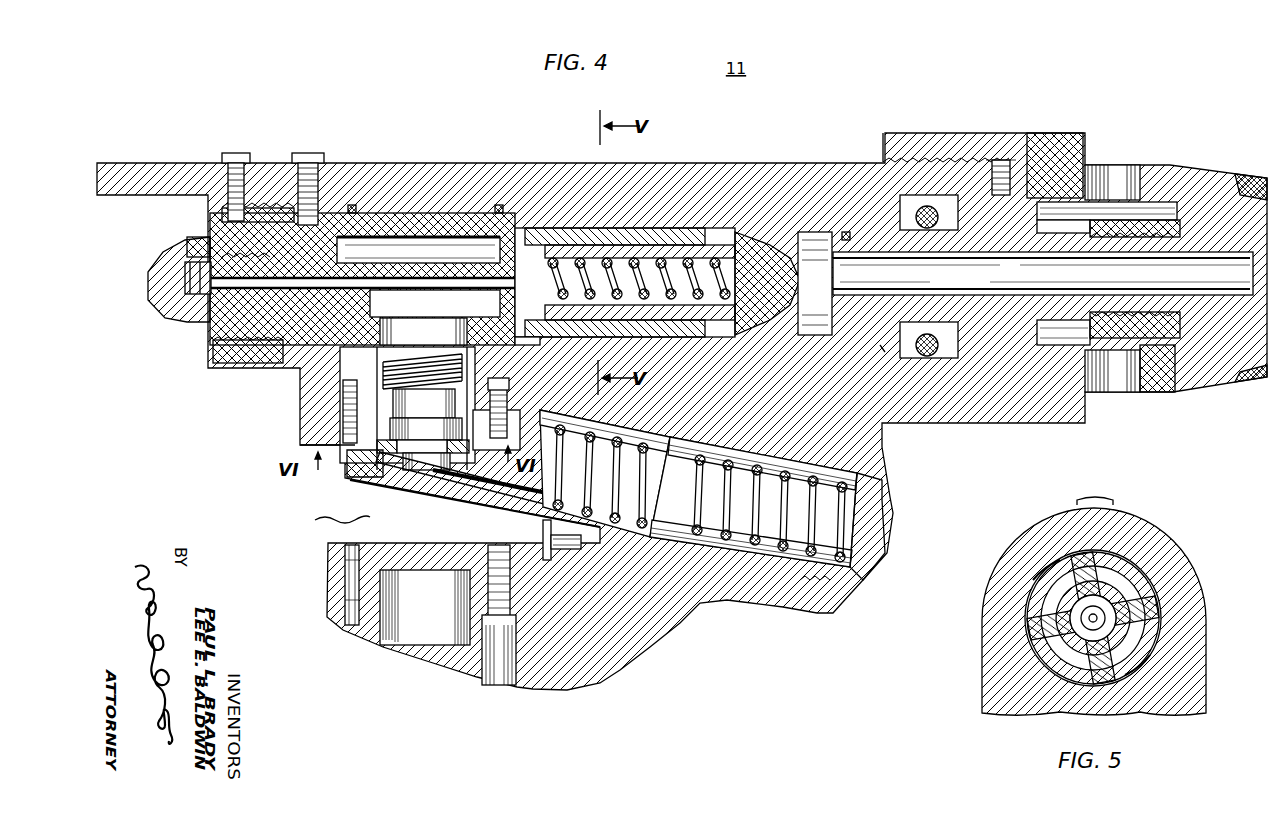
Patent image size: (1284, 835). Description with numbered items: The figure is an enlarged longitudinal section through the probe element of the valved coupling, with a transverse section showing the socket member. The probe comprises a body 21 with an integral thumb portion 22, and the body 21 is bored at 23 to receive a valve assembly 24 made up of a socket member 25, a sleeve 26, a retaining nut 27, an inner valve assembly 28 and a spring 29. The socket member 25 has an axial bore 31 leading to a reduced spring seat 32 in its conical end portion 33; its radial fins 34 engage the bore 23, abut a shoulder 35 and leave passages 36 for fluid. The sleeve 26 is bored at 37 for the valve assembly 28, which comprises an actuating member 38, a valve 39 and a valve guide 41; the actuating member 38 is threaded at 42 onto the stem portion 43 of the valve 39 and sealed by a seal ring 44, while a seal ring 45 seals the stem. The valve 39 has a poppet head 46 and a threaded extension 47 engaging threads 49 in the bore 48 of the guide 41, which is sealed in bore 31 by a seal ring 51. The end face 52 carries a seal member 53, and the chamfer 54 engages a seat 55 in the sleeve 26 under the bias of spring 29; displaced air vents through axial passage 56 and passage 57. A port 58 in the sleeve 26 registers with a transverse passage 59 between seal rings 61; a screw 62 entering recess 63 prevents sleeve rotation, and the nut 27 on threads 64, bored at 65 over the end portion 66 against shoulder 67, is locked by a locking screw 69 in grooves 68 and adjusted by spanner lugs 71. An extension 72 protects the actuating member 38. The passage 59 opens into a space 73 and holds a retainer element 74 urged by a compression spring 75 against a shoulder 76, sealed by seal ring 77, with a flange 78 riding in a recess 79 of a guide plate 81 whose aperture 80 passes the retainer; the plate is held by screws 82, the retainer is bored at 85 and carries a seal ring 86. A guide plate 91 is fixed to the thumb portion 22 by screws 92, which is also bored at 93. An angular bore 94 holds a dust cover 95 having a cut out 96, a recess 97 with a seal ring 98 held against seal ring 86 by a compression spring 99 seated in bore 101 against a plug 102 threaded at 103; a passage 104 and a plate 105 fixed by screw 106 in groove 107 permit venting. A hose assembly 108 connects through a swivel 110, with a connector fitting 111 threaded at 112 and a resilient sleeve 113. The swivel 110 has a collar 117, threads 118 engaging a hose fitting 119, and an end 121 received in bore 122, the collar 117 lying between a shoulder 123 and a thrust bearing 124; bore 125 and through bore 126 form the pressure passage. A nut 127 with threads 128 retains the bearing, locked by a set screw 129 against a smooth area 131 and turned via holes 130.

In FIG. 4, the body 21 is at (740, 200).
In FIG. 5, the body 21 is at (1195, 560).
In FIG. 4, the thumb portion 22 is at (615, 680).
In FIG. 4, the bore 23 is at (425, 230).
In FIG. 5, the bore 23 is at (1130, 567).
In FIG. 4, the valve assembly 24 is at (418, 250).
In FIG. 4, the socket member 25 is at (700, 215).
In FIG. 5, the socket member 25 is at (1140, 593).
In FIG. 4, the sleeve 26 is at (460, 262).
In FIG. 4, the retaining nut 27 is at (230, 213).
In FIG. 4, the valve assembly 28 is at (490, 228).
In FIG. 4, the spring 29 is at (660, 240).
In FIG. 5, the spring 29 is at (1107, 630).
In FIG. 4, the bore 31 is at (680, 228).
In FIG. 4, the spring seat 32 is at (770, 230).
In FIG. 4, the conically-shaped end portion 33 is at (780, 235).
In FIG. 5, the fins 34 is at (1097, 560).
In FIG. 4, the shoulder 35 is at (745, 235).
In FIG. 5, the passages 36 is at (1050, 577).
In FIG. 4, the bore 37 is at (405, 235).
In FIG. 4, the actuating member 38 is at (157, 300).
In FIG. 4, the valve 39 is at (390, 240).
In FIG. 4, the valve guide 41 is at (590, 230).
In FIG. 4, the internal threads 42 is at (240, 258).
In FIG. 4, the stem portion 43 is at (185, 276).
In FIG. 4, the seal ring 44 is at (330, 205).
In FIG. 4, the seal ring 45 is at (300, 350).
In FIG. 4, the poppet head 46 is at (530, 230).
In FIG. 4, the threaded extension 47 is at (609, 231).
In FIG. 4, the bore 48 is at (625, 235).
In FIG. 4, the internal threads 49 is at (563, 258).
In FIG. 4, the seal ring 51 is at (615, 245).
In FIG. 4, the end face 52 is at (548, 228).
In FIG. 4, the seal member 53 is at (545, 322).
In FIG. 4, the chamfer 54 is at (578, 322).
In FIG. 4, the seat 55 is at (520, 338).
In FIG. 4, the axial passage 56 is at (445, 250).
In FIG. 4, the passage 57 is at (208, 322).
In FIG. 4, the port 58 is at (435, 317).
In FIG. 4, the transverse passage 59 is at (380, 355).
In FIG. 4, the seal rings 61 is at (355, 203).
In FIG. 4, the screw 62 is at (312, 156).
In FIG. 5, the screw 62 is at (1105, 500).
In FIG. 4, the elongated recess 63 is at (300, 195).
In FIG. 4, the threads 64 is at (218, 368).
In FIG. 4, the bore 65 is at (245, 366).
In FIG. 4, the reduced diameter end portion 66 is at (213, 345).
In FIG. 4, the shoulder 67 is at (275, 365).
In FIG. 4, the parallel grooves 68 is at (252, 190).
In FIG. 4, the locking screw 69 is at (230, 156).
In FIG. 4, the spanner wrench lugs 71 is at (210, 357).
In FIG. 4, the extension 72 is at (100, 163).
In FIG. 4, the spacing area 73 is at (332, 514).
In FIG. 4, the retainer element 74 is at (343, 395).
In FIG. 4, the compression spring 75 is at (465, 358).
In FIG. 4, the shoulder 76 is at (370, 342).
In FIG. 4, the seal ring 77 is at (345, 412).
In FIG. 4, the external flange 78 is at (345, 435).
In FIG. 4, the recess 79 is at (330, 444).
In FIG. 4, the aperture 80 is at (355, 460).
In FIG. 4, the guide plate 81 is at (538, 410).
In FIG. 4, the screws 82 is at (507, 395).
In FIG. 4, the bore 85 is at (407, 408).
In FIG. 4, the seal ring 86 is at (380, 480).
In FIG. 4, the guide plate 91 is at (345, 553).
In FIG. 4, the screws 92 is at (512, 585).
In FIG. 4, the bore 93 is at (425, 630).
In FIG. 4, the angularly disposed bore 94 is at (740, 590).
In FIG. 4, the dust cover 95 is at (640, 430).
In FIG. 4, the cut out 96 is at (360, 480).
In FIG. 4, the recess 97 is at (415, 485).
In FIG. 4, the seal ring 98 is at (480, 485).
In FIG. 4, the compression spring 99 is at (775, 580).
In FIG. 4, the bore 101 is at (690, 445).
In FIG. 4, the plug 102 is at (880, 490).
In FIG. 4, the screw threads 103 is at (815, 612).
In FIG. 4, the passage 104 is at (440, 475).
In FIG. 4, the plate 105 is at (545, 527).
In FIG. 4, the screw 106 is at (552, 543).
In FIG. 4, the longitudinal groove 107 is at (480, 508).
In FIG. 4, the flexible hose assembly 108 is at (1210, 175).
In FIG. 4, the swivel 110 is at (848, 240).
In FIG. 4, the connector fitting 111 is at (985, 145).
In FIG. 4, the internal threads 112 is at (935, 140).
In FIG. 4, the resilient sleeve 113 is at (1245, 176).
In FIG. 4, the collar 117 is at (860, 230).
In FIG. 4, the external threads 118 is at (1110, 390).
In FIG. 4, the hose fitting 119 is at (1130, 380).
In FIG. 4, the opposite end 121 is at (815, 230).
In FIG. 4, the bore 122 is at (808, 230).
In FIG. 4, the shoulder 123 is at (880, 345).
In FIG. 4, the thrust bearing 124 is at (905, 165).
In FIG. 4, the bore 125 is at (1043, 273).
In FIG. 4, the through bore 126 is at (1196, 277).
In FIG. 4, the nut 127 is at (1055, 210).
In FIG. 4, the external threads 128 is at (965, 160).
In FIG. 4, the set screw 129 is at (998, 162).
In FIG. 4, the holes 130 is at (1095, 165).
In FIG. 4, the smooth annular area 131 is at (1040, 180).